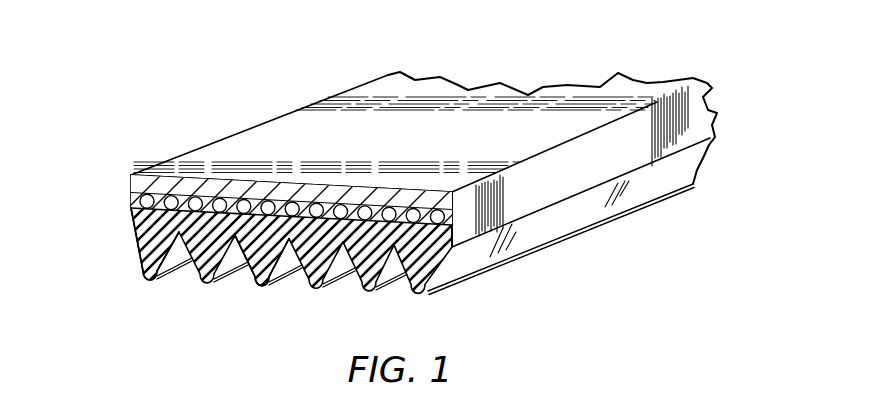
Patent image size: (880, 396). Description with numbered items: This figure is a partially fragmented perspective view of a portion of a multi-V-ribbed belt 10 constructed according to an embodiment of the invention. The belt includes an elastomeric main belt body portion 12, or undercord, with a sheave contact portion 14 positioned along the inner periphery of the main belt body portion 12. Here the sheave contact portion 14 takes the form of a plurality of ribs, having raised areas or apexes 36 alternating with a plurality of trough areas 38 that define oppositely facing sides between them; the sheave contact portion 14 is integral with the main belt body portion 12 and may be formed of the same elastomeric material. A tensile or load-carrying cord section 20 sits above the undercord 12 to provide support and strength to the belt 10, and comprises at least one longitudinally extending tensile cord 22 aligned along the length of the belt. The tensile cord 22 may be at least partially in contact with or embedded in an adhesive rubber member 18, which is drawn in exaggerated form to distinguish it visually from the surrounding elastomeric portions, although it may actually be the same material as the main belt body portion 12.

The multi-V-ribbed belt 10 is at (378, 200).
The main belt body portion 12 is at (435, 250).
The sheave contact portion 14 is at (282, 283).
The adhesive rubber member 18 is at (132, 189).
The tensile cord section 20 is at (459, 225).
The tensile cord 22 is at (133, 236).
The apexes 36 is at (155, 282).
The trough areas 38 is at (184, 242).